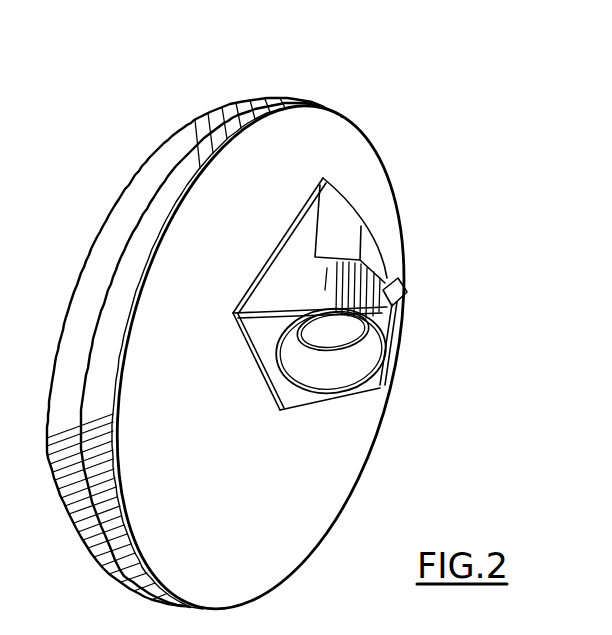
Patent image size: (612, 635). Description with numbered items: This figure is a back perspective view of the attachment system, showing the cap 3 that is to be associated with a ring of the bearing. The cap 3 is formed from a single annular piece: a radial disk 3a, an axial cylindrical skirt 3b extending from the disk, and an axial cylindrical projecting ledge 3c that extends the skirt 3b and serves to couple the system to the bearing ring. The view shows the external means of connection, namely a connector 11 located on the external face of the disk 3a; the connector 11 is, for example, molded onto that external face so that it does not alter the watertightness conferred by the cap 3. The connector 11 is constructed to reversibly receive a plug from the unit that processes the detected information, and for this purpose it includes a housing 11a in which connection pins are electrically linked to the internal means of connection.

The cap 3 is at (350, 120).
The radial disk 3a is at (353, 167).
The axial cylindrical skirt 3b is at (253, 110).
The axial cylindrical projecting ledge 3c is at (204, 122).
The connector 11 is at (372, 275).
The housing 11a is at (338, 358).